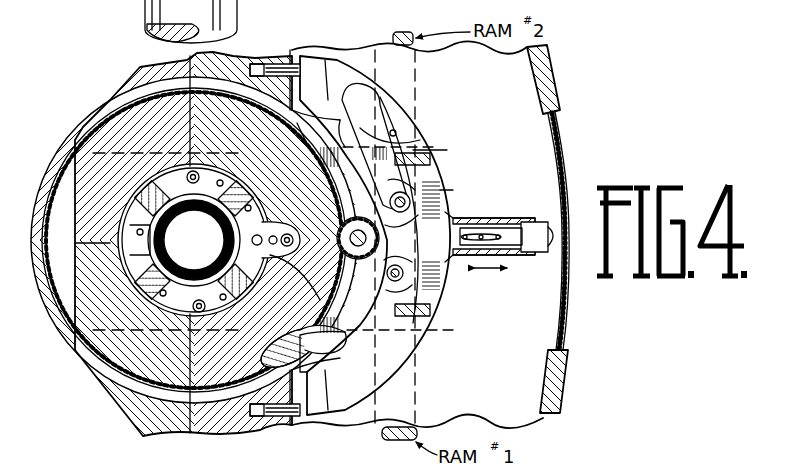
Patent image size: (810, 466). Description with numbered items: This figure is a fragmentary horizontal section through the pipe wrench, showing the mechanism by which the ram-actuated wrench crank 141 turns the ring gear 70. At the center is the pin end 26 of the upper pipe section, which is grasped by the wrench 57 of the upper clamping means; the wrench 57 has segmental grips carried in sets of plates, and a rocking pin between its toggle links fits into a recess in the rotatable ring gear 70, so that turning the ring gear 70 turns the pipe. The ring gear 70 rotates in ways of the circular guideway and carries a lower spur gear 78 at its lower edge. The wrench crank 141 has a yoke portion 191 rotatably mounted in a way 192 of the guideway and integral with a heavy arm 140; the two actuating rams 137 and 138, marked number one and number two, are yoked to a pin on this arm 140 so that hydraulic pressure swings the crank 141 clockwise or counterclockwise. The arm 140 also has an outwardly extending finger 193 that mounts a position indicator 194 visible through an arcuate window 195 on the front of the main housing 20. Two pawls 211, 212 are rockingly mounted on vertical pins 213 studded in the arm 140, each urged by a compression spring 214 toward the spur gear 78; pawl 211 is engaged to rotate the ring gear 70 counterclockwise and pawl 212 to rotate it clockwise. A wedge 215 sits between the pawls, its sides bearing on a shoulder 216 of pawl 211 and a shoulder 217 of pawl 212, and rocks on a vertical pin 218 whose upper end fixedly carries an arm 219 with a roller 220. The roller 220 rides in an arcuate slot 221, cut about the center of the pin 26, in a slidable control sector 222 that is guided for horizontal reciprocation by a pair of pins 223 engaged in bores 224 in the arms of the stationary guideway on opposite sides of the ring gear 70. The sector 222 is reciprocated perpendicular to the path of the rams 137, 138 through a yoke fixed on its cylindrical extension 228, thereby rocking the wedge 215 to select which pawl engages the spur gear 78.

The main housing 20 is at (562, 395).
The pin end 26 is at (184, 212).
The wrench 57 is at (122, 272).
The ring gear 70 is at (70, 185).
The spur gear 78 is at (342, 138).
The actuating ram 137 is at (418, 433).
The actuating ram 138 is at (398, 34).
The heavy arm 140 is at (443, 192).
The wrench crank 141 is at (443, 155).
The yoke portion 191 is at (110, 332).
The way 192 is at (313, 360).
The finger 193 is at (458, 262).
The position indicator 194 is at (556, 228).
The arcuate window 195 is at (563, 133).
The pawl 211 is at (356, 102).
The pawl 212 is at (400, 350).
The pin 213 is at (438, 165).
The compression spring 214 is at (418, 150).
The wedge 215 is at (292, 242).
The shoulder 216 is at (345, 224).
The shoulder 217 is at (345, 256).
The pin 218 is at (412, 258).
The arm 219 is at (413, 238).
The roller 220 is at (413, 208).
The arcuate slot 221 is at (388, 128).
The control sector 222 is at (367, 78).
The pin 223 is at (302, 62).
The bore 224 is at (262, 62).
The cylindrical extension 228 is at (516, 252).